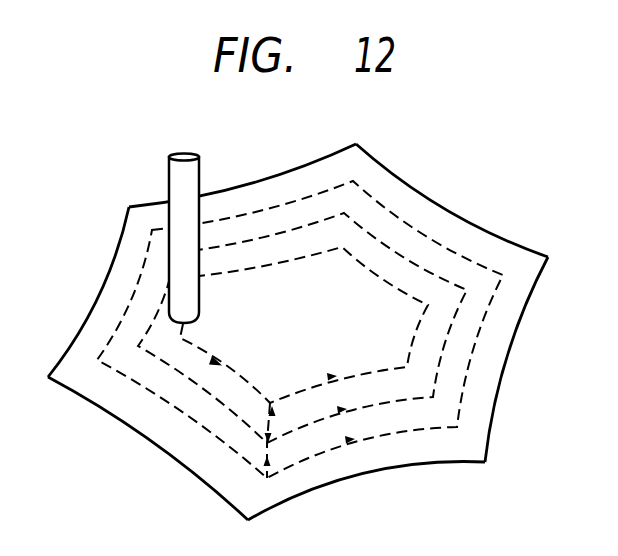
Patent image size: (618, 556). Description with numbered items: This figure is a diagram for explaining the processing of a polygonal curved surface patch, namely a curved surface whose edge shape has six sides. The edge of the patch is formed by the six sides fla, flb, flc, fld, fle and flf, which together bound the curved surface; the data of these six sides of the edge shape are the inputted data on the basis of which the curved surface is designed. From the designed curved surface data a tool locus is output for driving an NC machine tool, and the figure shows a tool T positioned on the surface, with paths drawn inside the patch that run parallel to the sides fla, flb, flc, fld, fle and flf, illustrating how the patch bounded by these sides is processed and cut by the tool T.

The side fla is at (392, 464).
The side flb is at (505, 370).
The side flc is at (452, 212).
The side fld is at (275, 173).
The side fle is at (110, 268).
The side flf is at (147, 438).
The tool T is at (199, 172).